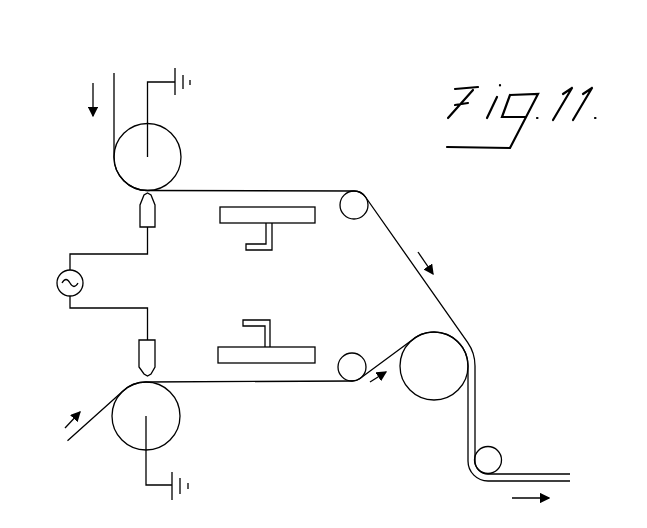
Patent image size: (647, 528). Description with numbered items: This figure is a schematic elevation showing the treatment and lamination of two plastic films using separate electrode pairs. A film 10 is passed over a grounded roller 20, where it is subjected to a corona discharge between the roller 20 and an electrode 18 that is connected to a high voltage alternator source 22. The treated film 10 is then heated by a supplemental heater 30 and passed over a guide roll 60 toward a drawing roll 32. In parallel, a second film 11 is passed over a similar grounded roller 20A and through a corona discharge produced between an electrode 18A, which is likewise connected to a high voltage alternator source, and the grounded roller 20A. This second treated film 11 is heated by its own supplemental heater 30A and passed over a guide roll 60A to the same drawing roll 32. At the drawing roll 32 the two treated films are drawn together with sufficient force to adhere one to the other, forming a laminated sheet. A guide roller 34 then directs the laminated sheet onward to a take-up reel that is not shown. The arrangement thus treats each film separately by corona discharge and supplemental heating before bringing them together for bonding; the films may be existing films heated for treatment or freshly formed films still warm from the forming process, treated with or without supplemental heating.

The film 10 is at (114, 80).
The second film 11 is at (68, 442).
The electrode 18 is at (155, 208).
The electrode 18A is at (155, 351).
The grounded roller 20 is at (179, 138).
The grounded roller 20A is at (179, 418).
The high voltage alternator source 22 is at (57, 292).
The supplemental heater 30 is at (272, 235).
The supplemental heater 30A is at (277, 345).
The drawing roll 32 is at (428, 402).
The guide roller 34 is at (497, 450).
The guide roll 60 is at (348, 222).
The guide roll 60A is at (358, 350).